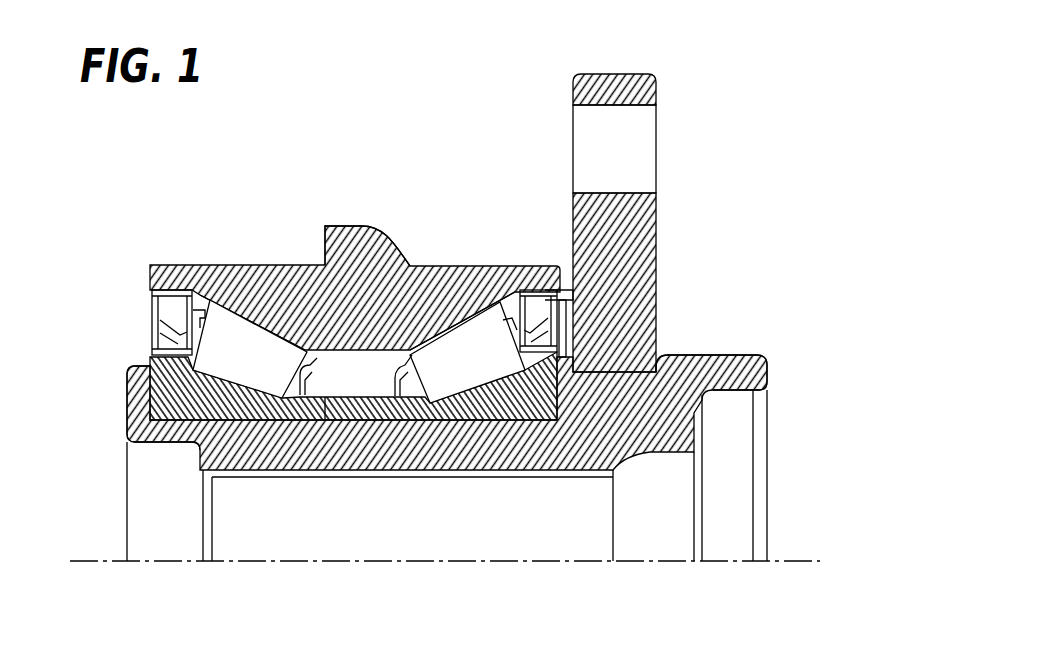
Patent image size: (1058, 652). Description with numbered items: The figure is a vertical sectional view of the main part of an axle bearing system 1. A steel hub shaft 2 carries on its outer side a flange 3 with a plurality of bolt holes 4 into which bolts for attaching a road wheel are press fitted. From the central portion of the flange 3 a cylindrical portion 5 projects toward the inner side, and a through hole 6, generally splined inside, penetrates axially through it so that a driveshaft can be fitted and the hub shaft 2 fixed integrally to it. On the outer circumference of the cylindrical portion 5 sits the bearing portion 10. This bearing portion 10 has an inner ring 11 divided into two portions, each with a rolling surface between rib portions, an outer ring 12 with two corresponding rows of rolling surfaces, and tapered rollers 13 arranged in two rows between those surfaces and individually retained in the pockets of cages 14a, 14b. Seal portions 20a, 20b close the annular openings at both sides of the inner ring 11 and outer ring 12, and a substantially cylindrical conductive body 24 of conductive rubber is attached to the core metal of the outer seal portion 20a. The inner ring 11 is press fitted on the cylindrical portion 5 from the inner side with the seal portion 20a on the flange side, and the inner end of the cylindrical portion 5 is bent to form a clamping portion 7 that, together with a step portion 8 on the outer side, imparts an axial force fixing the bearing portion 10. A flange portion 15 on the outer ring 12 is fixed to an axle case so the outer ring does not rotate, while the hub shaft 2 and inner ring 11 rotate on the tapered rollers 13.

The axle bearing system 1 is at (728, 232).
The hub shaft 2 is at (779, 481).
The flange 3 is at (655, 87).
The bolt holes 4 is at (643, 150).
The cylindrical portion 5 is at (420, 463).
The through hole 6 is at (488, 535).
The clamping portion 7 is at (127, 380).
The step portion 8 is at (683, 363).
The bearing portion 10 is at (407, 279).
The inner ring 11 is at (148, 445).
The outer ring 12 is at (355, 244).
The tapered rollers 13 is at (233, 325).
The cage 14a is at (325, 350).
The cage 14b is at (395, 350).
The flange portion 15 is at (348, 226).
The seal portion 20a is at (575, 333).
The seal portion 20b is at (138, 332).
The conductive body 24 is at (570, 300).